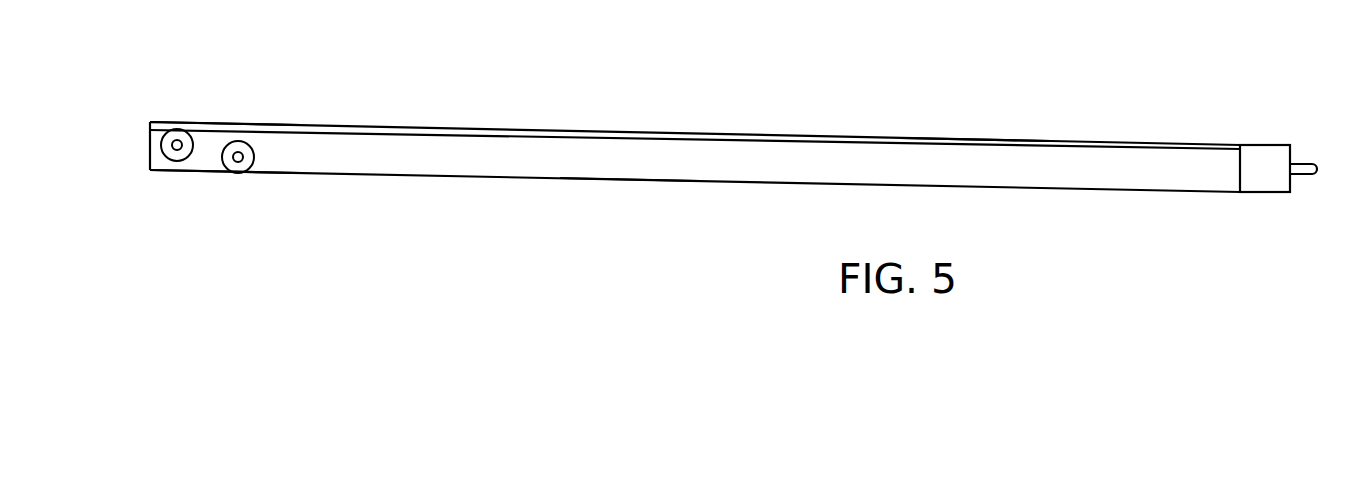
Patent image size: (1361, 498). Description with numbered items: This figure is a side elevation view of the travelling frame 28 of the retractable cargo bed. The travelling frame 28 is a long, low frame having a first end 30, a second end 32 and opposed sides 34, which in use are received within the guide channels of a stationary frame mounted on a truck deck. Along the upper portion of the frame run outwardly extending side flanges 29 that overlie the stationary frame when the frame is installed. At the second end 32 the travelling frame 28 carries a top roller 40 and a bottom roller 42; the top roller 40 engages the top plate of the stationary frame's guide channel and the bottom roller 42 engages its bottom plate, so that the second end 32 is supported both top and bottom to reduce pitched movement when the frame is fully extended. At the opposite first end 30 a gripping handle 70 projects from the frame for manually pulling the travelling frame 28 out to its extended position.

The travelling frame 28 is at (681, 118).
The side flanges 29 is at (940, 142).
The first end 30 is at (1290, 184).
The second end 32 is at (150, 148).
The opposed sides 34 is at (587, 167).
The top roller 40 is at (182, 158).
The bottom roller 42 is at (248, 168).
The gripping handle 70 is at (1305, 168).